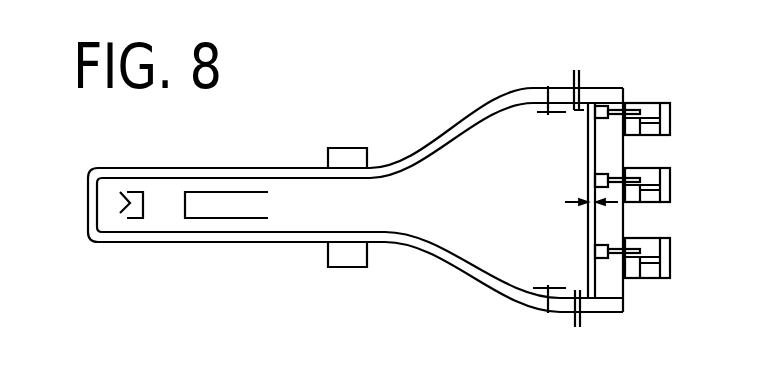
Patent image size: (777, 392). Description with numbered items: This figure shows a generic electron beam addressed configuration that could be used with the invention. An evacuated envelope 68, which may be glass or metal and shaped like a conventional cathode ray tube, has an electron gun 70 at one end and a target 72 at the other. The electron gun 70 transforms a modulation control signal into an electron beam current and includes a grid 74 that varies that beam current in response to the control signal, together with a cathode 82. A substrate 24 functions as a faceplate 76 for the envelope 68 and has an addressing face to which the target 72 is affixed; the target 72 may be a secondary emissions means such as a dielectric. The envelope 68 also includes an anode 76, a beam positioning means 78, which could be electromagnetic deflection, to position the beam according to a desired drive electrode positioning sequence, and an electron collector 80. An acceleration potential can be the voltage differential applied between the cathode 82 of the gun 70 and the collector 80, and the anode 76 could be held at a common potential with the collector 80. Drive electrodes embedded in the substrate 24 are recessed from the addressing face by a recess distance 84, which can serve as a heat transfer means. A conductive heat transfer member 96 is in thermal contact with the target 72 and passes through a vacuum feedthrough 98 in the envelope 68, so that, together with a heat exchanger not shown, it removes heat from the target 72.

The substrate 24 is at (612, 275).
The evacuated envelope 68 is at (471, 122).
The electron gun 70 is at (131, 187).
The target 72 is at (587, 235).
The grid 74 is at (136, 222).
The anode 76 is at (237, 220).
The beam positioning means 78 is at (353, 162).
The electron collector 80 is at (546, 86).
The cathode 82 is at (118, 200).
The recess distance 84 is at (600, 212).
The conductive heat transfer member 96 is at (577, 74).
The vacuum feedthrough 98 is at (571, 84).